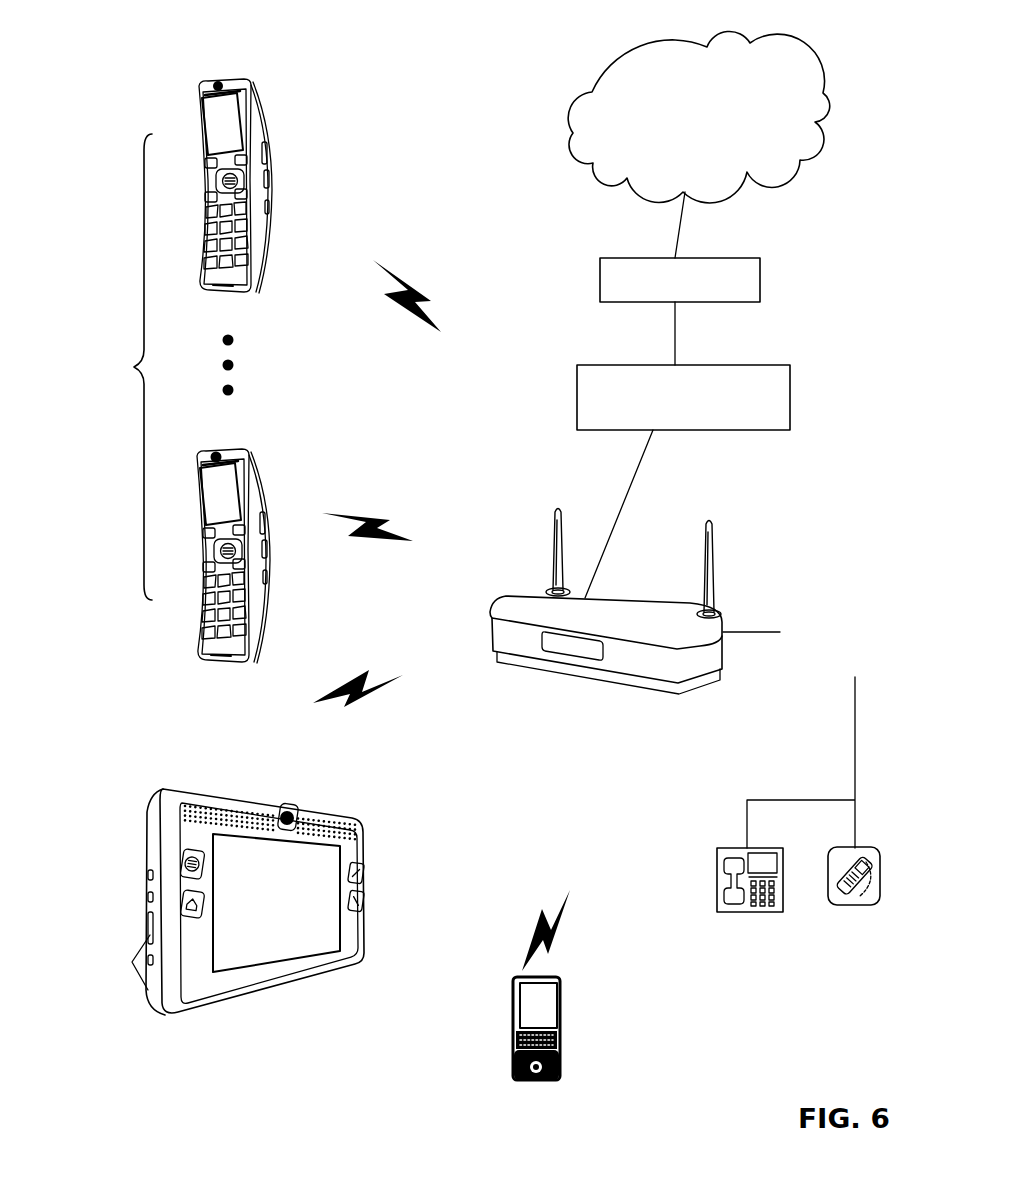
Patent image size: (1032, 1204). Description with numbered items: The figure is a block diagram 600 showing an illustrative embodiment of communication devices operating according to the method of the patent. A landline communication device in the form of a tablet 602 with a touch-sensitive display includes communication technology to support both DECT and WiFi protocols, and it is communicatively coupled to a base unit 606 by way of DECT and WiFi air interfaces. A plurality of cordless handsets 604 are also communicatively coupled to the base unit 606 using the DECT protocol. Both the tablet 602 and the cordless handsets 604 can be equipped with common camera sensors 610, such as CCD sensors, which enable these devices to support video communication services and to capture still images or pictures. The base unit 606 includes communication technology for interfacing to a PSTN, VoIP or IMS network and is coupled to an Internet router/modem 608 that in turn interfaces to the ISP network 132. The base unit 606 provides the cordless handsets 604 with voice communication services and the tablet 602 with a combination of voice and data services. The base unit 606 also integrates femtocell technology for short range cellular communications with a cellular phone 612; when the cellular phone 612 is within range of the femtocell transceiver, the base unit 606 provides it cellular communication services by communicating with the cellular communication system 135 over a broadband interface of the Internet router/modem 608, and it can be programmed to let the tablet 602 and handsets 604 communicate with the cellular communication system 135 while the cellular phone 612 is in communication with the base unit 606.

The block diagram 600 is at (860, 1084).
The tablet 602 is at (168, 787).
The cordless handsets 604 is at (262, 476).
The base unit 606 is at (673, 698).
The Internet router/modem 608 is at (775, 423).
The camera sensors 610 is at (220, 455).
The cellular phone 612 is at (561, 1025).
The ISP network 132 is at (745, 292).
The cellular communication system 135 is at (714, 167).